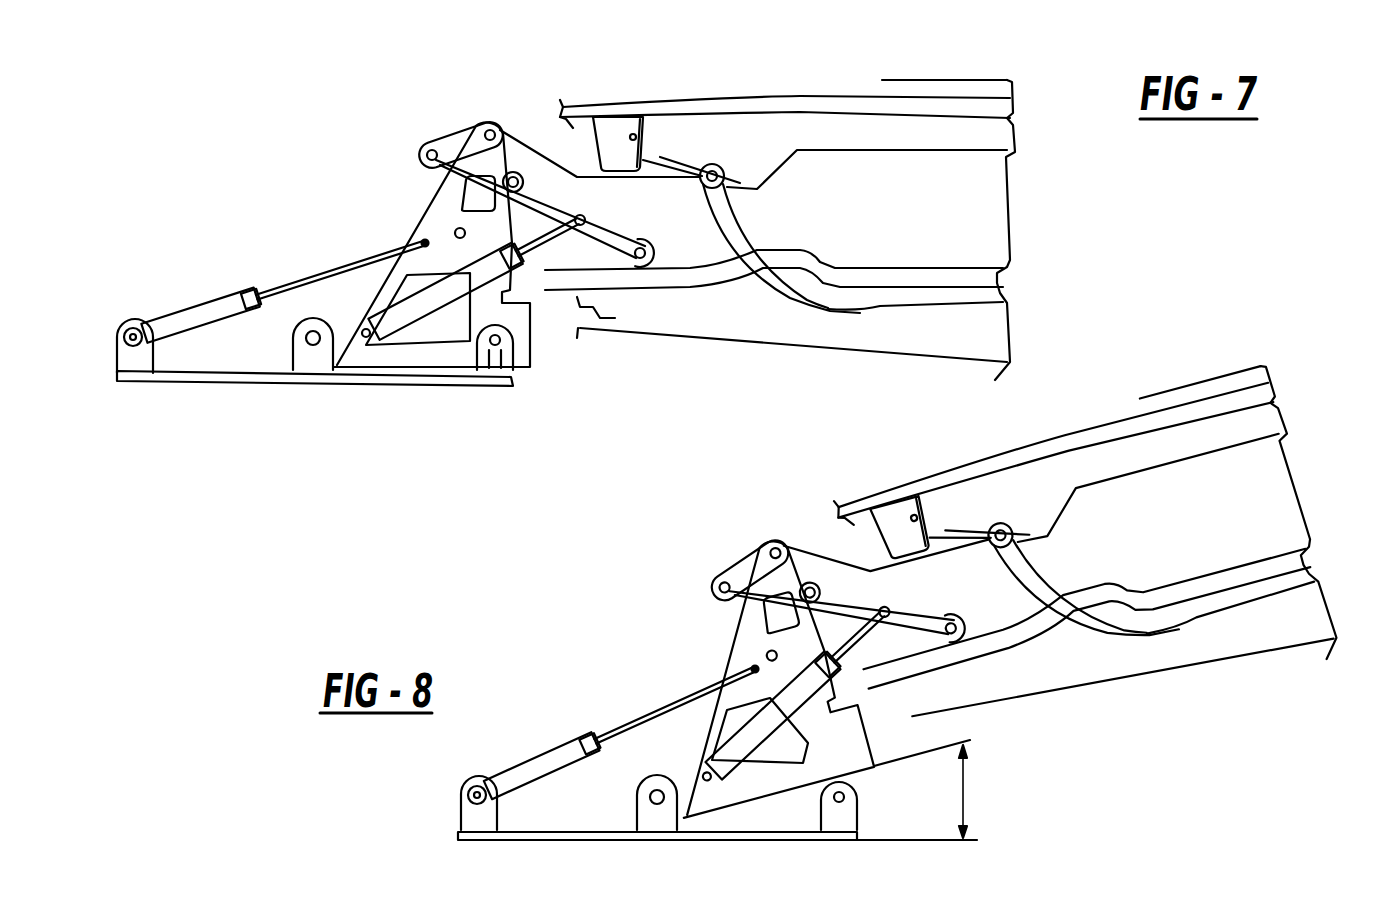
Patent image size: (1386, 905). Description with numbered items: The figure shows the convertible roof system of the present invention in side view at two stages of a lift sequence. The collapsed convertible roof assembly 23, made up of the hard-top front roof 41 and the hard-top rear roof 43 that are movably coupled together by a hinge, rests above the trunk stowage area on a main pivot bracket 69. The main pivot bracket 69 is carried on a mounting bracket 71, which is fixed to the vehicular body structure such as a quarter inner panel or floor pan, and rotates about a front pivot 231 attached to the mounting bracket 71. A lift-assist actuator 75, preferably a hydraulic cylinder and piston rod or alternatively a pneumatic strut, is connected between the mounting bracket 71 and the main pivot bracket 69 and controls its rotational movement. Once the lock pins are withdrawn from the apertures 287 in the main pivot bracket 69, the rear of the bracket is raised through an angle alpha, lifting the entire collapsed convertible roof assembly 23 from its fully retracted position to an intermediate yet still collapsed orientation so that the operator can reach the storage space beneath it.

In FIG. 7, the convertible roof assembly 23 is at (797, 60).
In FIG. 8, the convertible roof assembly 23 is at (997, 422).
In FIG. 7, the front roof 41 is at (703, 103).
In FIG. 8, the front roof 41 is at (1086, 433).
In FIG. 7, the rear roof 43 is at (713, 342).
In FIG. 8, the rear roof 43 is at (1195, 661).
In FIG. 7, the main pivot bracket 69 is at (513, 133).
In FIG. 8, the main pivot bracket 69 is at (742, 633).
In FIG. 7, the mounting bracket 71 is at (190, 388).
In FIG. 8, the mounting bracket 71 is at (583, 840).
In FIG. 7, the lift-assist actuator 75 is at (183, 320).
In FIG. 8, the lift-assist actuator 75 is at (512, 775).
In FIG. 8, the front pivot 231 is at (657, 800).
In FIG. 7, the apertures 287 is at (455, 229).